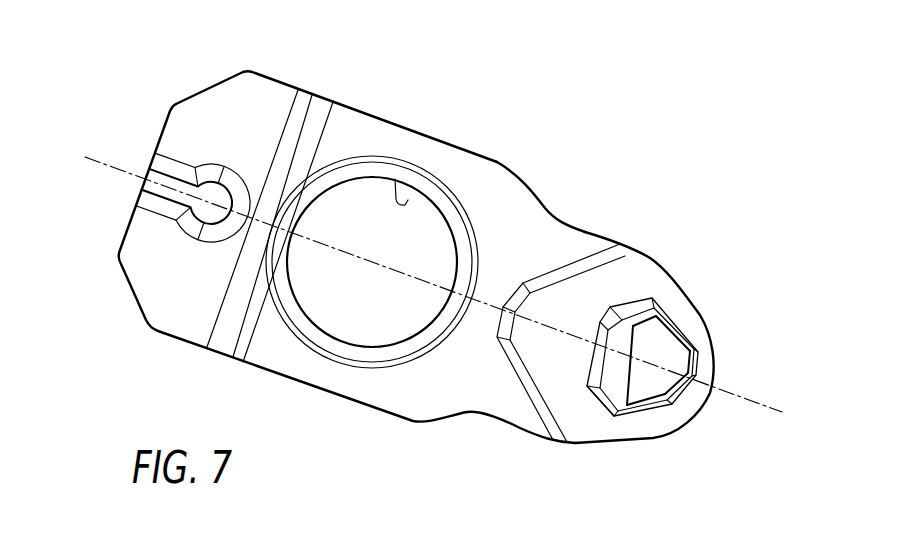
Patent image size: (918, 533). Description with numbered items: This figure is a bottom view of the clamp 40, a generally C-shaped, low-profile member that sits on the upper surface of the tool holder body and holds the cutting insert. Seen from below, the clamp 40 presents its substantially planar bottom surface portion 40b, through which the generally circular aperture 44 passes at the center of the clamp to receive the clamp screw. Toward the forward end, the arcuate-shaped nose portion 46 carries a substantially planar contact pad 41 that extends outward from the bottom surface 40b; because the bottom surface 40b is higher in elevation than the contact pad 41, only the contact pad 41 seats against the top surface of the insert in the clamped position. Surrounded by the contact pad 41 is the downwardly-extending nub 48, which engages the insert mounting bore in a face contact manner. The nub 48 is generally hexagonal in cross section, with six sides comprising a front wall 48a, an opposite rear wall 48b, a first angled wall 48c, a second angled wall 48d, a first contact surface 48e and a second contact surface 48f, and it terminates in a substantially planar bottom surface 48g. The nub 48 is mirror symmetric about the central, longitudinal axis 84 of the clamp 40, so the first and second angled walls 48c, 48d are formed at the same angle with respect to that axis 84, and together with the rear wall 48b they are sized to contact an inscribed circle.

The clamp 40 is at (410, 87).
The bottom surface portion 40b is at (503, 200).
The contact pad 41 is at (637, 277).
The aperture 44 is at (407, 200).
The nose portion 46 is at (682, 252).
The nub 48 is at (673, 307).
The front wall 48a is at (687, 378).
The rear wall 48b is at (617, 330).
The first angled wall 48c is at (687, 335).
The second angled wall 48d is at (648, 405).
The first contact surface 48e is at (618, 300).
The second contact surface 48f is at (593, 400).
The bottom surface 48g is at (647, 380).
The central longitudinal axis 84 is at (733, 393).